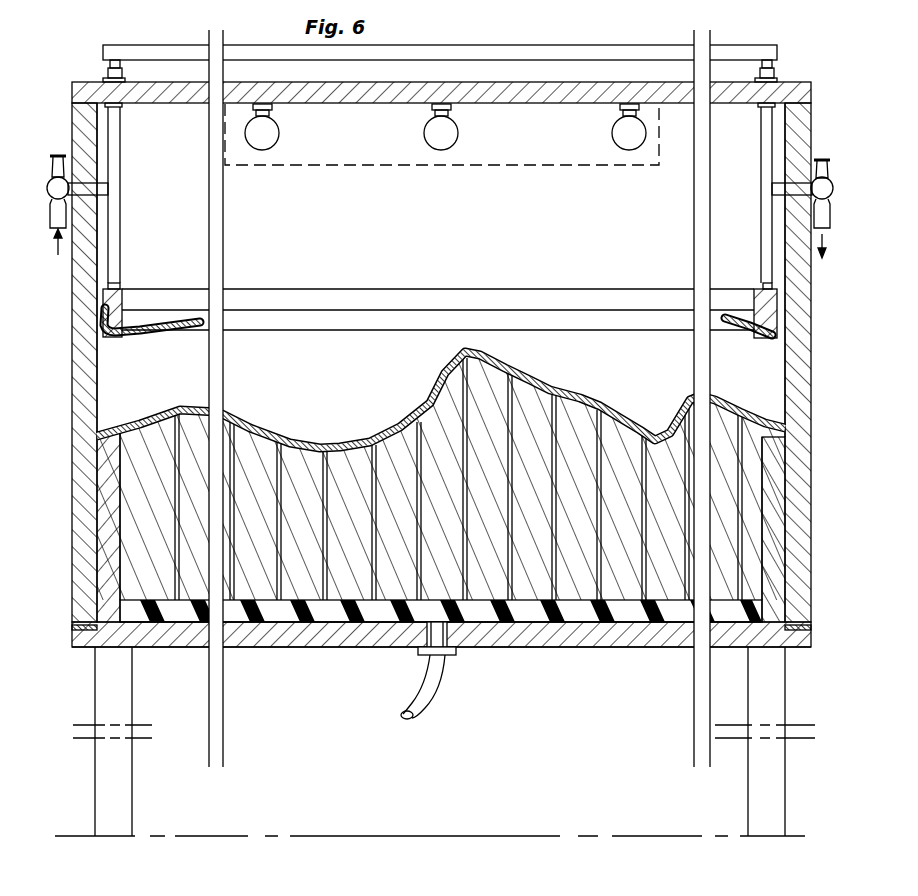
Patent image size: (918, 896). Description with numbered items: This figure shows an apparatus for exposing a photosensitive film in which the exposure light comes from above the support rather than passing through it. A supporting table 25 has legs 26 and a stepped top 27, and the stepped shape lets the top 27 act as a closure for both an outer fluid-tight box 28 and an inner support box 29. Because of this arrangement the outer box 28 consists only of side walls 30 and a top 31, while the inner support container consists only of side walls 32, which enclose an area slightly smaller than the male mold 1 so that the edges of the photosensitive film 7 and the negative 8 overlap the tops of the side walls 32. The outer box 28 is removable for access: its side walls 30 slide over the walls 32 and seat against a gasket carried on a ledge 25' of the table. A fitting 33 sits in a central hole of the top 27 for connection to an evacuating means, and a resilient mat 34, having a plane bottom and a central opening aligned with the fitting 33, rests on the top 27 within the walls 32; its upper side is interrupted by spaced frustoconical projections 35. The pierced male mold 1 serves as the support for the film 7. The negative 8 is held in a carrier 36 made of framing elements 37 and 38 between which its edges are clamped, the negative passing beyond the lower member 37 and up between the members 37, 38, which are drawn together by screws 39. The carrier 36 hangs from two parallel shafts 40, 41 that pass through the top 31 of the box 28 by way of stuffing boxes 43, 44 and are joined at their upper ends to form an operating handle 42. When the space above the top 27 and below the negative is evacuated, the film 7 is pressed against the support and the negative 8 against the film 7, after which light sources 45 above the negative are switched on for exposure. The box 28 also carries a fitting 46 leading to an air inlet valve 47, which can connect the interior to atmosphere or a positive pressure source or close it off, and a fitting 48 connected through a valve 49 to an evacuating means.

The male mold 1 is at (350, 524).
The photosensitive film 7 is at (308, 445).
The negative 8 is at (158, 332).
The supporting table 25 is at (441, 654).
The ledge 25' is at (442, 663).
The legs 26 is at (106, 692).
The top 27 is at (532, 647).
The outer fluid-tight box 28 is at (98, 418).
The inner support box 29 is at (119, 516).
The side walls 30 is at (92, 402).
The top 31 is at (195, 95).
The side walls 32 is at (108, 545).
The fitting 33 is at (420, 653).
The mat 34 is at (302, 648).
The frustoconical projections 35 is at (340, 599).
The carrier 36 is at (182, 289).
The framing element 37 is at (262, 300).
The framing element 38 is at (330, 270).
The screws 39 is at (113, 283).
The shaft 40 is at (118, 218).
The shaft 41 is at (766, 215).
The operating handle 42 is at (540, 45).
The stuffing box 43 is at (125, 80).
The stuffing box 44 is at (777, 81).
The light sources 45 is at (456, 136).
The fitting 46 is at (84, 190).
The air inlet valve 47 is at (66, 183).
The fitting 48 is at (800, 190).
The valve 49 is at (816, 182).